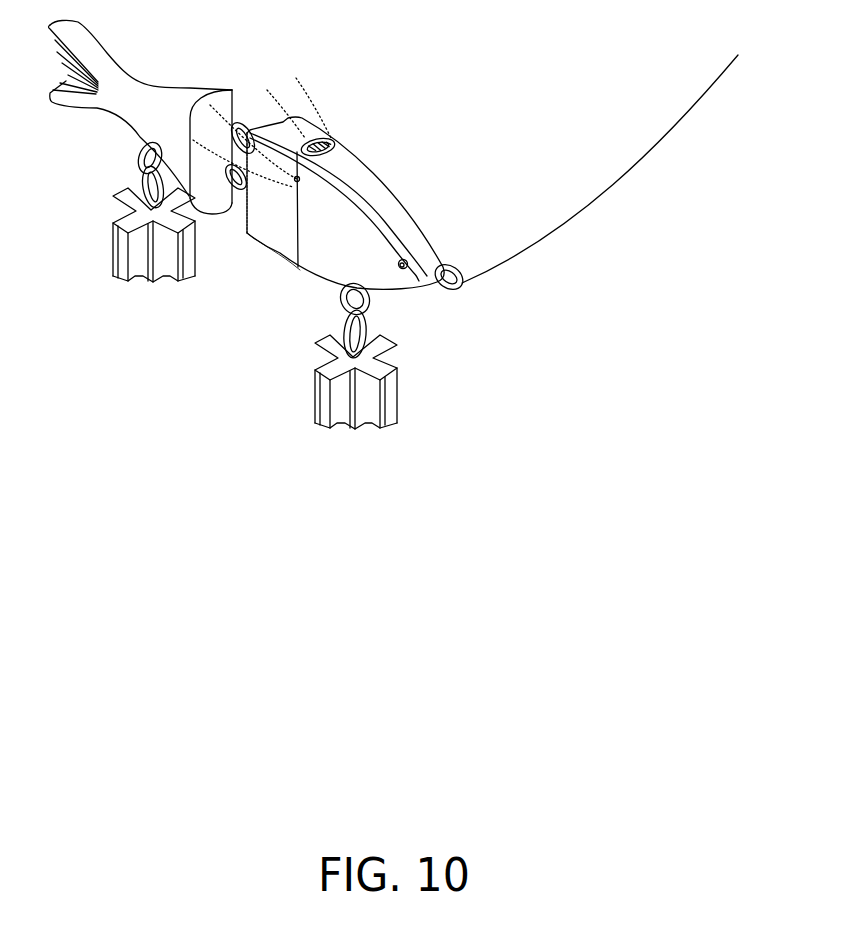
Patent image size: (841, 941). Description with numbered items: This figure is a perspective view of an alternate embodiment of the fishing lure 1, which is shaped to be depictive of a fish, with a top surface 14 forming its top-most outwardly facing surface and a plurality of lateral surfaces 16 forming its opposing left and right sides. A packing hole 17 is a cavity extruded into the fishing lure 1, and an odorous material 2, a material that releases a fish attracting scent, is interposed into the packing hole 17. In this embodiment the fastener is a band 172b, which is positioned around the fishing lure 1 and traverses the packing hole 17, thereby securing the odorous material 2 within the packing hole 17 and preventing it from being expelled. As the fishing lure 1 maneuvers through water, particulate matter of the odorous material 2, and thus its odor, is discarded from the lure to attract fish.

The fishing lure 1 is at (721, 222).
The odorous material 2 is at (332, 143).
The top surface 14 is at (413, 228).
The lateral surfaces 16 is at (280, 243).
The packing hole 17 is at (336, 159).
The band 172b is at (298, 230).